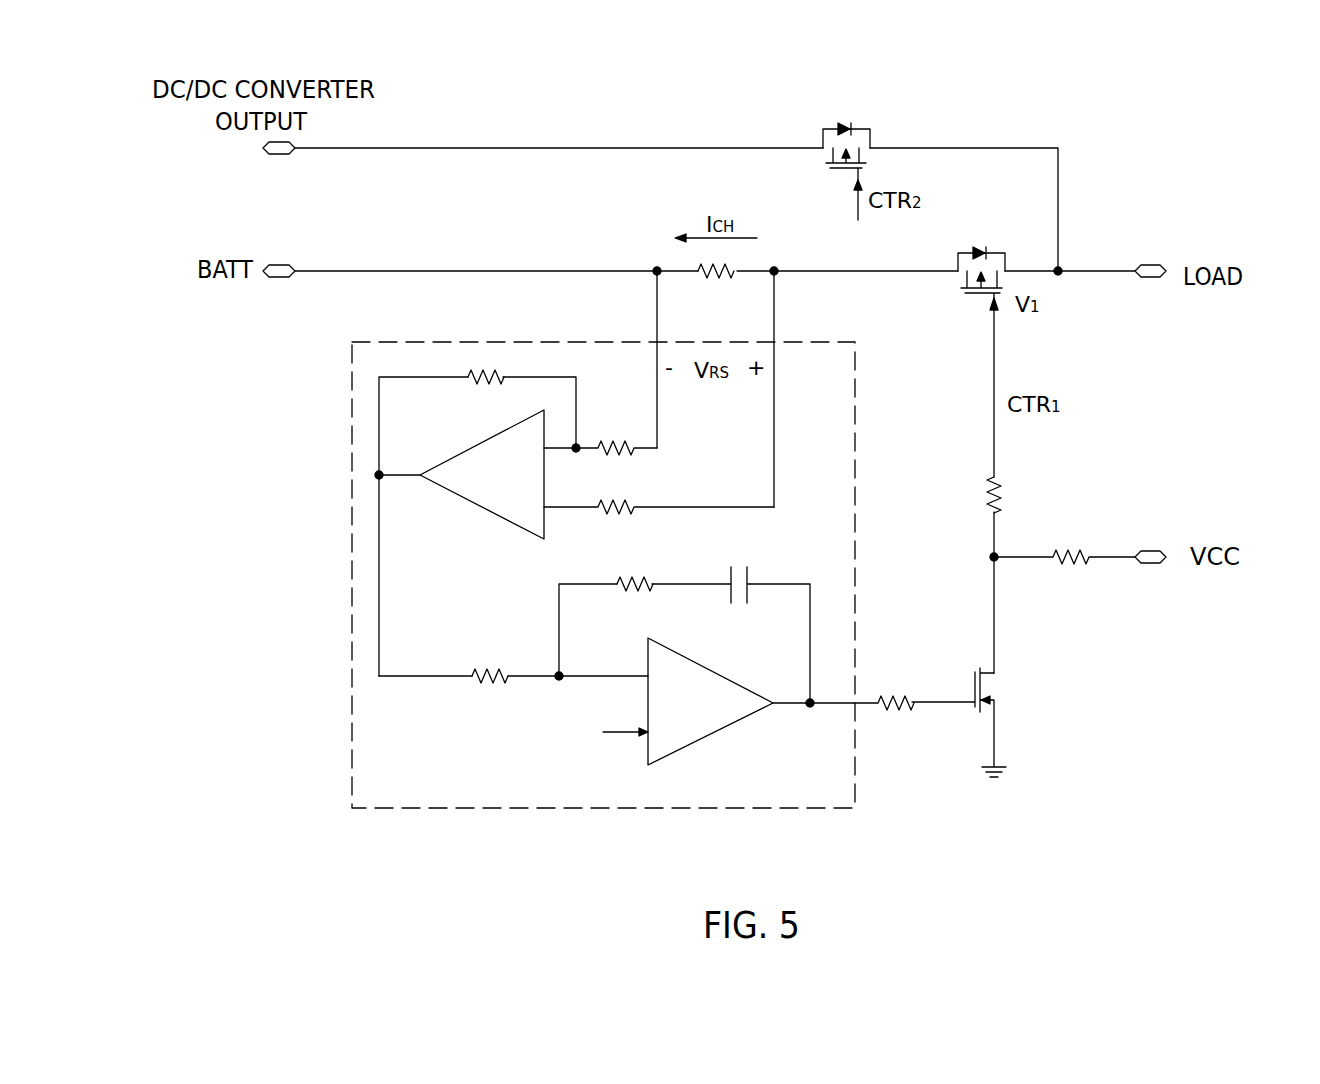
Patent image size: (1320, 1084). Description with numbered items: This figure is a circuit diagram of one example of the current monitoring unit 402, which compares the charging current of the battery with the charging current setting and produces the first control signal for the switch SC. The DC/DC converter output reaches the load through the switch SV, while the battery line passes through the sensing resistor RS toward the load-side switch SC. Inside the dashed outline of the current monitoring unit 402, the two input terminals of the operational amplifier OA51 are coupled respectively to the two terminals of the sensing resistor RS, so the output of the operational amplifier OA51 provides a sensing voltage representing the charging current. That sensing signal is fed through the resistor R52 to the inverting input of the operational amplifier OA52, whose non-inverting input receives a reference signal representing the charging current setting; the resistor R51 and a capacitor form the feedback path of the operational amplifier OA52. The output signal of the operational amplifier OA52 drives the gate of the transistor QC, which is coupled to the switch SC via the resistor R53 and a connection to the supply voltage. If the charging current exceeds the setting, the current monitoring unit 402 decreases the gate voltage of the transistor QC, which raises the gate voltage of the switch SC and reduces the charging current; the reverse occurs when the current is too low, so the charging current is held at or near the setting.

The current monitoring unit 402 is at (492, 342).
The switch SV is at (846, 156).
The switch SC is at (981, 346).
The sensing resistor RS is at (716, 289).
The resistor R51 is at (635, 572).
The resistor R52 is at (493, 661).
The resistor R53 is at (1020, 495).
The operational amplifier OA51 is at (482, 474).
The operational amplifier OA52 is at (710, 701).
The transistor QC is at (974, 722).